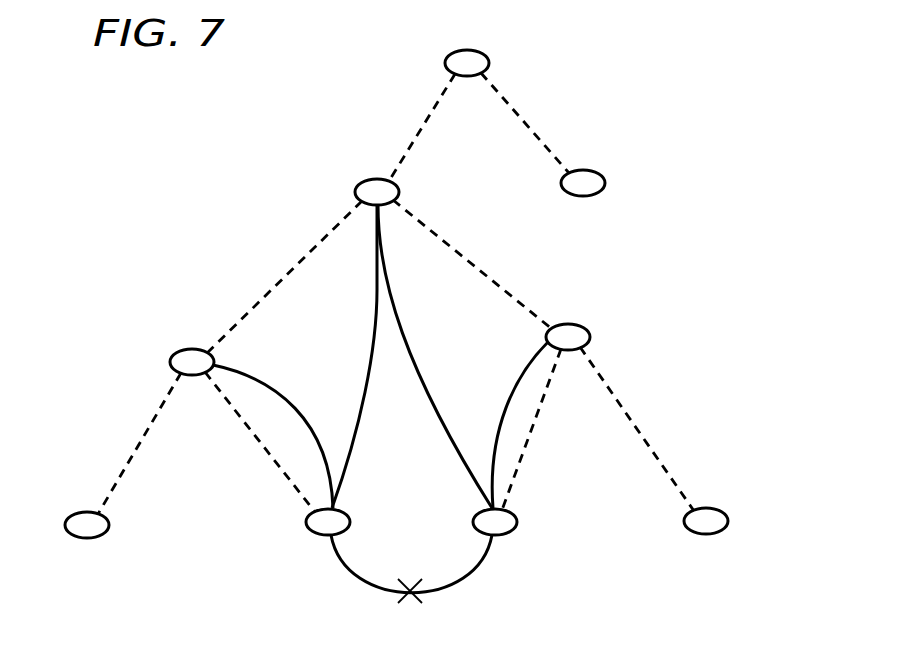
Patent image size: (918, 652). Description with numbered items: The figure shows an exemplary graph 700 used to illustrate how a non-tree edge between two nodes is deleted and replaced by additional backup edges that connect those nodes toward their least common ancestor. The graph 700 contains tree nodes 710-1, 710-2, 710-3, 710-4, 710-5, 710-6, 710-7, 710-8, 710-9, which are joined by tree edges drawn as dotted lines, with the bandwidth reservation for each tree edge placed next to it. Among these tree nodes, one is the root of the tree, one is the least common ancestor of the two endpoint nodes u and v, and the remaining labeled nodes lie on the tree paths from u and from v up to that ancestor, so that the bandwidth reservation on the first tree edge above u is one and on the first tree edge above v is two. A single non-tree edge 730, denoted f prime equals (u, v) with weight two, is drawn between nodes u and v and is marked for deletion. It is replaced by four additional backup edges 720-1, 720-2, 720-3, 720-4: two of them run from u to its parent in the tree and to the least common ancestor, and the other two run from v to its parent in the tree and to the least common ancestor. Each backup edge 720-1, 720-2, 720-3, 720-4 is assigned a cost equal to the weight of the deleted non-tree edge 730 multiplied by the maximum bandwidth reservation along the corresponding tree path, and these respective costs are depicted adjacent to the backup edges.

The graph 700 is at (674, 74).
The tree node 710-1 is at (490, 63).
The tree node 710-2 is at (605, 183).
The tree node 710-3 is at (366, 176).
The tree node 710-4 is at (577, 326).
The tree node 710-5 is at (728, 523).
The tree node 710-6 is at (505, 534).
The tree node 710-7 is at (185, 348).
The tree node 710-8 is at (85, 540).
The tree node 710-9 is at (316, 540).
The additional backup edge 720-1 is at (252, 374).
The additional backup edge 720-2 is at (374, 320).
The additional backup edge 720-3 is at (407, 340).
The additional backup edge 720-4 is at (532, 371).
The non-tree edge 730 is at (364, 582).